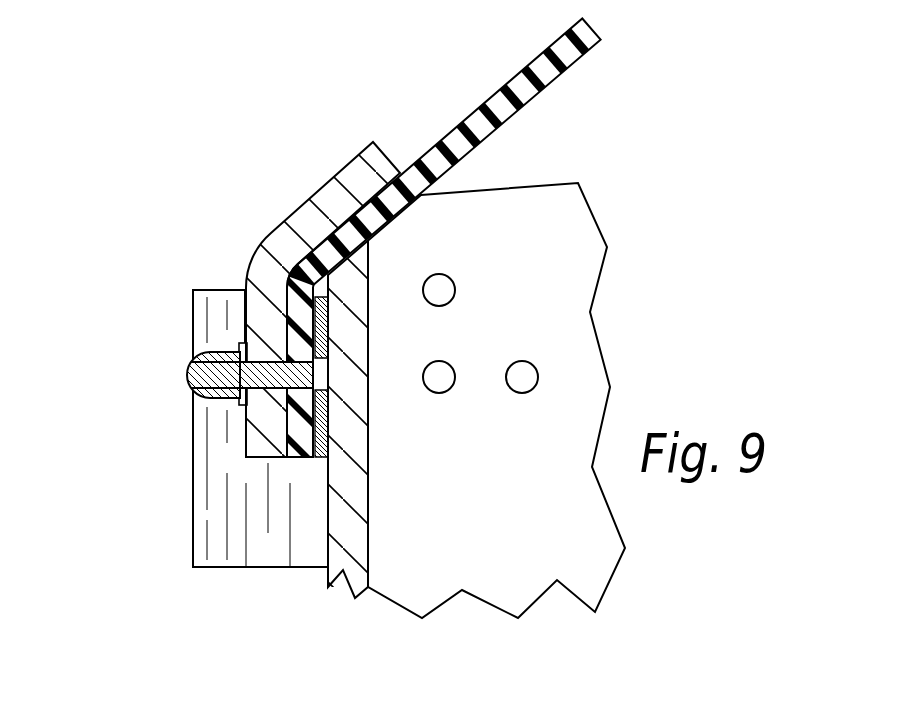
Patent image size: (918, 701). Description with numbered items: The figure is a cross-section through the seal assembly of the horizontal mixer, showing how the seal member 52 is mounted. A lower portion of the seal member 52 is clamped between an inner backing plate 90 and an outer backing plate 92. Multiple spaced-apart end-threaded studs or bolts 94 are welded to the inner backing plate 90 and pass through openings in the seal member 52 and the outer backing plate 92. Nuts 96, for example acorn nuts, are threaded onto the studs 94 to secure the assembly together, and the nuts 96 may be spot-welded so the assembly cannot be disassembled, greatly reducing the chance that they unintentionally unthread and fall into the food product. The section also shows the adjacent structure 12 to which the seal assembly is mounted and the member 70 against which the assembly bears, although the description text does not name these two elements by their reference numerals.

The mounting plate 12 is at (548, 233).
The seal member 52 is at (508, 88).
The block 70 is at (254, 518).
The inner backing plate 90 is at (322, 430).
The outer backing plate 92 is at (308, 215).
The end-threaded studs or bolts 94 is at (262, 376).
The nuts 96 is at (190, 375).